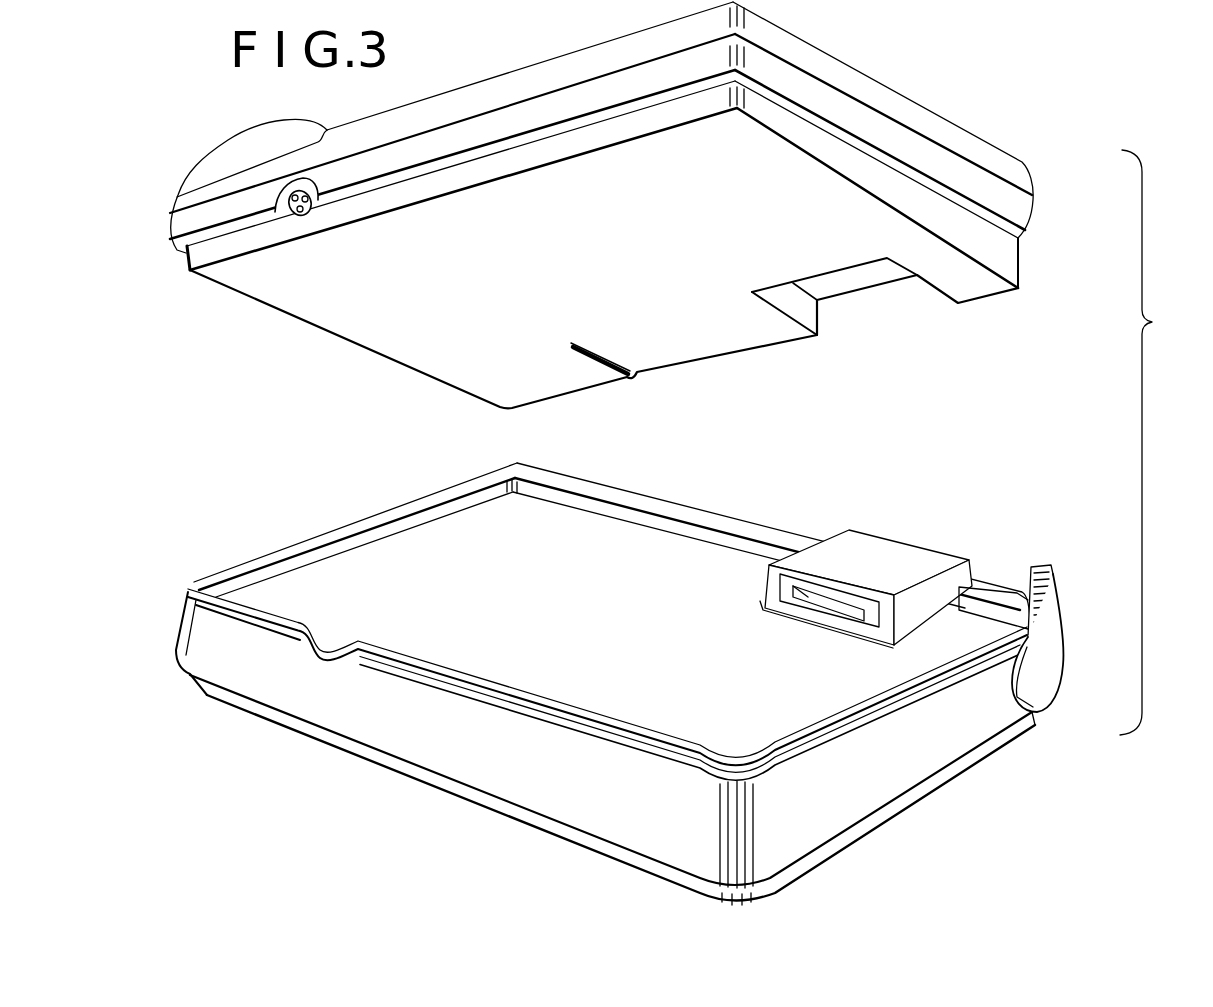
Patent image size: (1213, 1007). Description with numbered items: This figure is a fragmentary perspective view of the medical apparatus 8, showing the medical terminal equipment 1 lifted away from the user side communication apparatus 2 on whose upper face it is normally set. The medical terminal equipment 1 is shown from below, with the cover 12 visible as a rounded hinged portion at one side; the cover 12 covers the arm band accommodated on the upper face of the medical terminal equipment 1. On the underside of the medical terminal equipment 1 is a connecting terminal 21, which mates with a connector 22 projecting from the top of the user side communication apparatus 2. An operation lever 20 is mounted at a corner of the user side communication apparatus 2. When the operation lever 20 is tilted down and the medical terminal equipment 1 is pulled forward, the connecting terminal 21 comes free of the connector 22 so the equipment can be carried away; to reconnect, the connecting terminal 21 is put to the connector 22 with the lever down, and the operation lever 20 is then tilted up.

The medical terminal equipment 1 is at (952, 128).
The user side communication apparatus 2 is at (726, 524).
The medical apparatus 8 is at (1180, 335).
The cover 12 is at (231, 151).
The operation lever 20 is at (1056, 601).
The connecting terminal 21 is at (850, 278).
The connector 22 is at (872, 560).